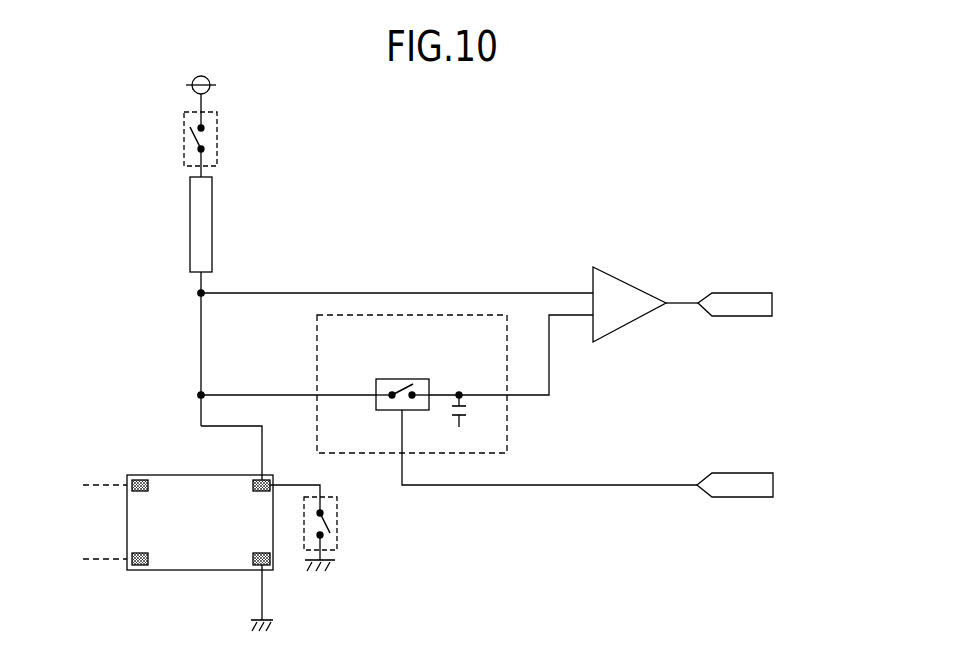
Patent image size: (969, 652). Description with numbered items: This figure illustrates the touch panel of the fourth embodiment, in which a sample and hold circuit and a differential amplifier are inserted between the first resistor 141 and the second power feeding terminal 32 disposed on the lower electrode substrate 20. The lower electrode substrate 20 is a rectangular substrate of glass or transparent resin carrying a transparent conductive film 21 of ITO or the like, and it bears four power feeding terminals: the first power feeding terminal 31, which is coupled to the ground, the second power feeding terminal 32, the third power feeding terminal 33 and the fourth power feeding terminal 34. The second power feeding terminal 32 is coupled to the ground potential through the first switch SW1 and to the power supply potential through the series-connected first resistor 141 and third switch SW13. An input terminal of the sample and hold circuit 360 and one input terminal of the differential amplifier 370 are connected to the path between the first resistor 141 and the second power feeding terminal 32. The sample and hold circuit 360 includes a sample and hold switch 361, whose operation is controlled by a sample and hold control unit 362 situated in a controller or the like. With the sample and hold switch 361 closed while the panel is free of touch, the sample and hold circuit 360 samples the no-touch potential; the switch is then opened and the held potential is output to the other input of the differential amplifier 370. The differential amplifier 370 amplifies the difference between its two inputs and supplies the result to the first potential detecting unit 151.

The third switch SW13 is at (217, 138).
The first resistor 141 is at (212, 222).
The differential amplifier 370 is at (627, 282).
The first potential detecting unit 151 is at (740, 293).
The sample and hold circuit 360 is at (448, 384).
The sample and hold switch 361 is at (392, 412).
The sample and hold control unit 362 is at (740, 473).
The lower electrode substrate 20 is at (215, 527).
The transparent conductive film 21 is at (223, 548).
The first power feeding terminal 31 is at (268, 565).
The second power feeding terminal 32 is at (252, 483).
The third power feeding terminal 33 is at (140, 565).
The fourth power feeding terminal 34 is at (138, 480).
The first switch SW1 is at (337, 520).